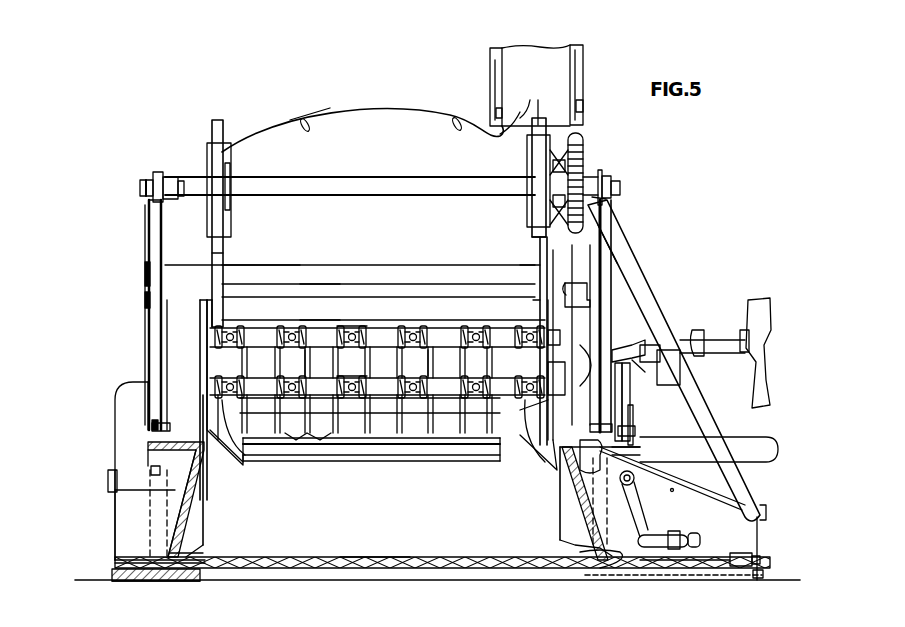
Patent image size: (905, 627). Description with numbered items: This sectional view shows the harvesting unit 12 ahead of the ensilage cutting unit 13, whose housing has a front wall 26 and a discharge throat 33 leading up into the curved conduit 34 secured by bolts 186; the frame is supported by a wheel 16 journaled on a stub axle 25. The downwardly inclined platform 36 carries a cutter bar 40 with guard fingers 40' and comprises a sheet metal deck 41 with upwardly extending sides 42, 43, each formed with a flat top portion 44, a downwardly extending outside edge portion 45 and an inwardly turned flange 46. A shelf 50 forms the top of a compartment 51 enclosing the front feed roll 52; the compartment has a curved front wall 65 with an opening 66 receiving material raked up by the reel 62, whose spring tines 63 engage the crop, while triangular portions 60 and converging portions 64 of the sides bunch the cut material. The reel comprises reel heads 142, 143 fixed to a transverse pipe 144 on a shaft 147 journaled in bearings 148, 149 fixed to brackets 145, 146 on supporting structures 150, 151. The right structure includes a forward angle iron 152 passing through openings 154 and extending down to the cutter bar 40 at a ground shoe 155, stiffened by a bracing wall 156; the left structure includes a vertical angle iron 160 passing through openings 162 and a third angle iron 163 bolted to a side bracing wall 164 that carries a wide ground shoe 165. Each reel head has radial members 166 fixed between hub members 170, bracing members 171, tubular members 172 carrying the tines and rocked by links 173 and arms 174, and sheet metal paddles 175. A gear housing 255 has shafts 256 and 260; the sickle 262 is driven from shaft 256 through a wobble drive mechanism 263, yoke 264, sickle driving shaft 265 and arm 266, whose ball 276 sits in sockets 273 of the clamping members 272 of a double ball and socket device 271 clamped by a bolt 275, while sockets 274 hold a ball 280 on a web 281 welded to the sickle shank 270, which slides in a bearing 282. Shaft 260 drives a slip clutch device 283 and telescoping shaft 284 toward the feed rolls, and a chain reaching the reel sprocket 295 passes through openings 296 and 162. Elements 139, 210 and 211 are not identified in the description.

The harvesting unit 12 is at (143, 352).
The ensilage cutting unit 13 is at (342, 107).
The wheel 16 is at (118, 537).
The stub axle 25 is at (108, 484).
The front wall 26 is at (408, 125).
The discharge throat 33 is at (518, 122).
The conduit 34 is at (586, 50).
The platform 36 is at (196, 518).
The cutter bar 40 is at (437, 583).
The guard fingers 40' is at (375, 587).
The sheet metal deck 41 is at (365, 481).
The side 42 is at (558, 505).
The side 43 is at (207, 494).
The flat top portion 44 is at (178, 371).
The outside edge portion 45 is at (150, 458).
The inwardly turned flange 46 is at (152, 472).
The shelf 50 is at (395, 271).
The compartment 51 is at (332, 258).
The front feed roll 52 is at (410, 448).
The triangular portion 60 is at (203, 530).
The reel 62 is at (438, 330).
The spring tines 63 is at (290, 378).
The converging portions 64 is at (216, 455).
The curved front wall 65 is at (228, 415).
The opening 66 is at (238, 442).
The belt clip 139 is at (303, 124).
The reel head 142 is at (530, 247).
The reel head 143 is at (226, 246).
The transverse pipe 144 is at (362, 186).
The bracket 145 is at (161, 175).
The bracket 146 is at (613, 181).
The shaft 147 is at (186, 190).
The bearing 148 is at (146, 180).
The bearing 149 is at (601, 166).
The right hand supporting structure 150 is at (146, 255).
The left hand supporting structure 151 is at (626, 232).
The forward angle iron 152 is at (149, 282).
The openings 154 is at (149, 304).
The ground shoe 155 is at (130, 580).
The bracing wall 156 is at (172, 490).
The angle iron 160 is at (599, 322).
The openings 162 is at (641, 412).
The third angle iron 163 is at (637, 284).
The side bracing wall 164 is at (758, 511).
The ground shoe 165 is at (718, 565).
The radial members 166 is at (216, 305).
The circular hub members 170 is at (223, 144).
The bracing member 171 is at (223, 212).
The transverse tubular members 172 is at (380, 330).
The links 173 is at (536, 270).
The arm 174 is at (558, 345).
The sheet metal paddles 175 is at (320, 297).
The bolts 186 is at (493, 112).
The belt line 210 is at (530, 106).
The bar 211 is at (709, 452).
The gear housing 255 is at (755, 318).
The shaft 256 is at (681, 366).
The rear shaft 260 is at (745, 343).
The sickle member 262 is at (132, 560).
The wobble drive mechanism 263 is at (660, 343).
The bifurcated yoke member 264 is at (636, 386).
The sickle driving shaft 265 is at (634, 430).
The arm 266 is at (634, 478).
The sickle shank 270 is at (592, 572).
The double ball and socket device 271 is at (690, 472).
The clamping members 272 is at (575, 545).
The ball sockets 273 is at (648, 530).
The ball sockets 274 is at (700, 540).
The bolt 275 is at (672, 540).
The ball 276 is at (657, 493).
The ball 280 is at (690, 536).
The web 281 is at (642, 575).
The bearing 282 is at (745, 577).
The slip clutch device 283 is at (701, 325).
The telescoping shaft 284 is at (630, 348).
The sprocket 295 is at (583, 162).
The openings 296 is at (604, 372).